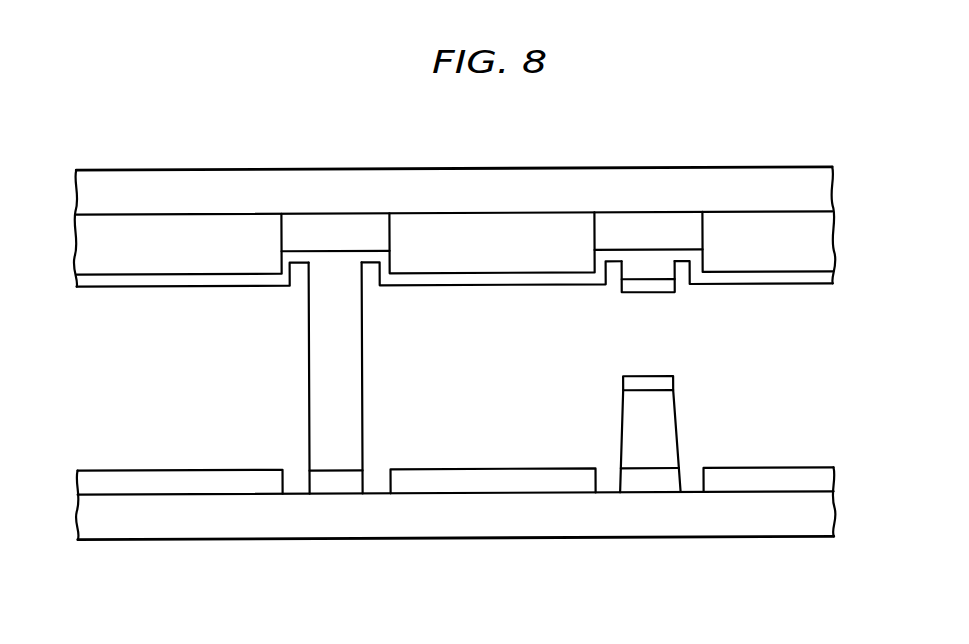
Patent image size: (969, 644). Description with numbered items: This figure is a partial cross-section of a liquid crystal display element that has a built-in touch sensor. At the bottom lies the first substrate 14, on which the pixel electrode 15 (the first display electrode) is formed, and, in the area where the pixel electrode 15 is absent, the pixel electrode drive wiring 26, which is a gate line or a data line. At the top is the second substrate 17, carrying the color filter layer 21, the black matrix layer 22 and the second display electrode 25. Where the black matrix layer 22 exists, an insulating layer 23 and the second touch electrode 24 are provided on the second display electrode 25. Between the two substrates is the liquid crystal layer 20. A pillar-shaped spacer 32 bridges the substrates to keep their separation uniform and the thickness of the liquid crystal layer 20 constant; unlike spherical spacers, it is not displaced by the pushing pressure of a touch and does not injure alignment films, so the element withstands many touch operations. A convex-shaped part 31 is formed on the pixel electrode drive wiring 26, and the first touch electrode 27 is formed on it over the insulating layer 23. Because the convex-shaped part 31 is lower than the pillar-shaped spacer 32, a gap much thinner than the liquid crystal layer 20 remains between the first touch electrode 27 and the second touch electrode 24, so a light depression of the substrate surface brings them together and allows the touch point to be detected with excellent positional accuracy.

The first substrate 14 is at (823, 518).
The pixel electrode 15 is at (483, 477).
The second substrate 17 is at (836, 186).
The liquid crystal layer 20 is at (118, 373).
The color filter layer 21 is at (829, 241).
The black matrix layer 22 is at (346, 246).
The insulating layer 23 is at (672, 275).
The second touch electrode 24 is at (638, 290).
The second display electrode 25 is at (831, 278).
The pixel electrode drive wiring 26 is at (667, 473).
The first touch electrode 27 is at (673, 383).
The convex-shaped part 31 is at (668, 420).
The pillar-shaped spacer 32 is at (350, 334).